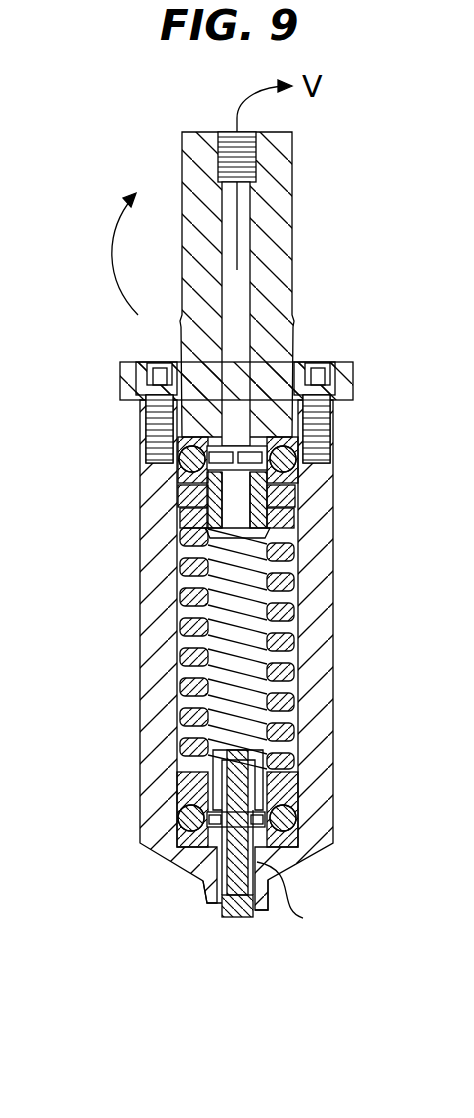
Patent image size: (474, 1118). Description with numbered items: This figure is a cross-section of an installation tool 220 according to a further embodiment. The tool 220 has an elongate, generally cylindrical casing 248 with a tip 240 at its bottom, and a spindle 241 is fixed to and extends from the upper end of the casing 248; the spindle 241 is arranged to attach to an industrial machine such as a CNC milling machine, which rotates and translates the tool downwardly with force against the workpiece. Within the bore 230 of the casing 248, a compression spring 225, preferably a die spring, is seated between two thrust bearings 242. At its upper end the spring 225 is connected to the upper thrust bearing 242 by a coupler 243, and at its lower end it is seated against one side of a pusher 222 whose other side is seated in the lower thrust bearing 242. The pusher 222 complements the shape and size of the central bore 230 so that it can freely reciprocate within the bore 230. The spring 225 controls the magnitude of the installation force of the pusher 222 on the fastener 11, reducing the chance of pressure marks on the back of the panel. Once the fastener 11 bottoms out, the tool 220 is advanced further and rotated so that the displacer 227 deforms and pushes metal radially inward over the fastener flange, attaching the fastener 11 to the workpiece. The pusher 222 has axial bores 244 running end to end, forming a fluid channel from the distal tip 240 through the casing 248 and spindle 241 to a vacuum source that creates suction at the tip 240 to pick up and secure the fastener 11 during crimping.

The fastener 11 is at (237, 920).
The installation tool 220 is at (130, 450).
The pusher 222 is at (187, 783).
The compression spring 225 is at (185, 595).
The displacer 227 is at (257, 912).
The bore 230 is at (287, 533).
The tip 240 is at (207, 898).
The spindle 241 is at (285, 213).
The thrust bearing 242 is at (287, 450).
The coupler 243 is at (187, 497).
The axial bore 244 is at (220, 775).
The casing 248 is at (328, 628).